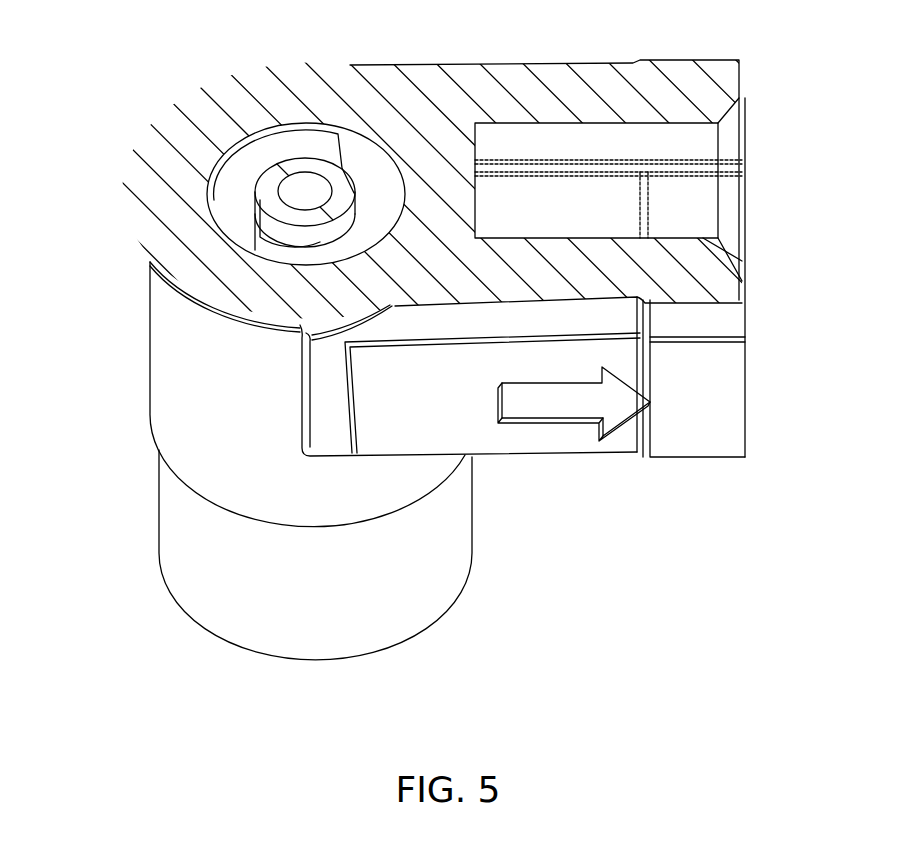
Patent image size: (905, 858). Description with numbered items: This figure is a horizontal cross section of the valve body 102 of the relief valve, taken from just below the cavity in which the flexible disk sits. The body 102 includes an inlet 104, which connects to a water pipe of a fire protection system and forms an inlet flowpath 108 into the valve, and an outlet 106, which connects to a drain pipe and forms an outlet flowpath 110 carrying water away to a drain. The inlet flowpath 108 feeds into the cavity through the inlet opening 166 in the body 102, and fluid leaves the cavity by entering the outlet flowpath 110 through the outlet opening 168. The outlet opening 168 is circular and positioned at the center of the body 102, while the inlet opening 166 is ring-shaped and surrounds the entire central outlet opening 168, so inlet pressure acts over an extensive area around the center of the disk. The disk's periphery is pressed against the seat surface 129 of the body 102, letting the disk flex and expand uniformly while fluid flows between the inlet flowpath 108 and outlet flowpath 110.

The body 102 is at (120, 72).
The inlet 104 is at (158, 503).
The outlet 106 is at (692, 73).
The inlet flowpath 108 is at (306, 122).
The outlet flowpath 110 is at (343, 153).
The seat surface 129 is at (288, 122).
The inlet opening 166 is at (235, 135).
The outlet opening 168 is at (255, 190).